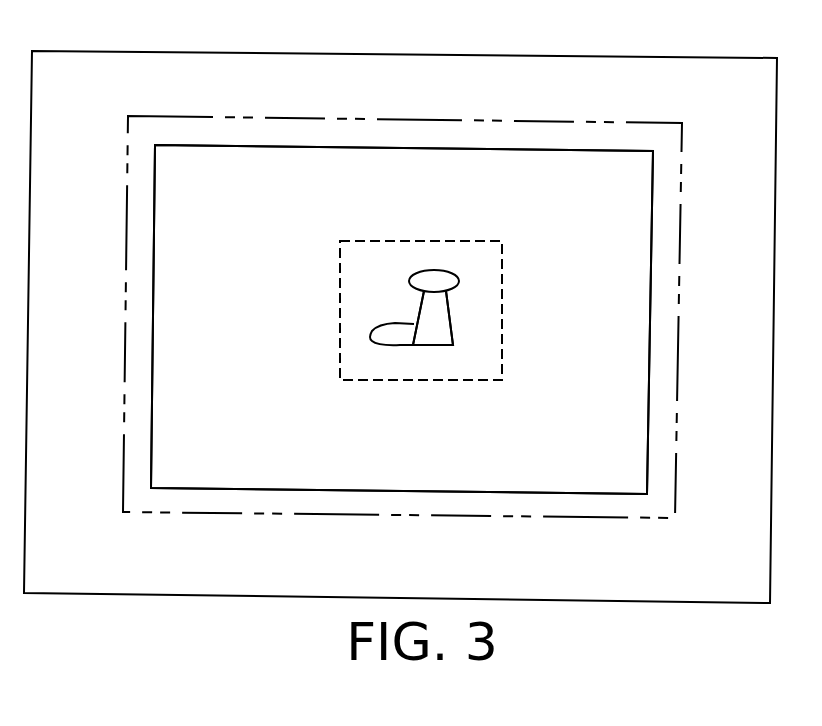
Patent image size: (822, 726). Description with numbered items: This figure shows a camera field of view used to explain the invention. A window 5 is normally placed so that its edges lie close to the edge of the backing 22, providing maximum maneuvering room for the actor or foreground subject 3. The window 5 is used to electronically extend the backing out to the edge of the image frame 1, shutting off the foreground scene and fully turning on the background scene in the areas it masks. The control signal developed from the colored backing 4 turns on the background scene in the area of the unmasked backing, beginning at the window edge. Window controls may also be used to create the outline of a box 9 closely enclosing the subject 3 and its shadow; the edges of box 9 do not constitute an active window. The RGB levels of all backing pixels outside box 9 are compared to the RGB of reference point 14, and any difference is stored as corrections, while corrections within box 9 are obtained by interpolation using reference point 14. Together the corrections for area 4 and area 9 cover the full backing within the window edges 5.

The image frame 1 is at (97, 52).
The backing 22 is at (160, 115).
The window 5 is at (365, 148).
The colored backing 4 is at (282, 163).
The box 9 is at (503, 283).
The foreground subject 3 is at (452, 269).
The reference point 14 is at (396, 272).